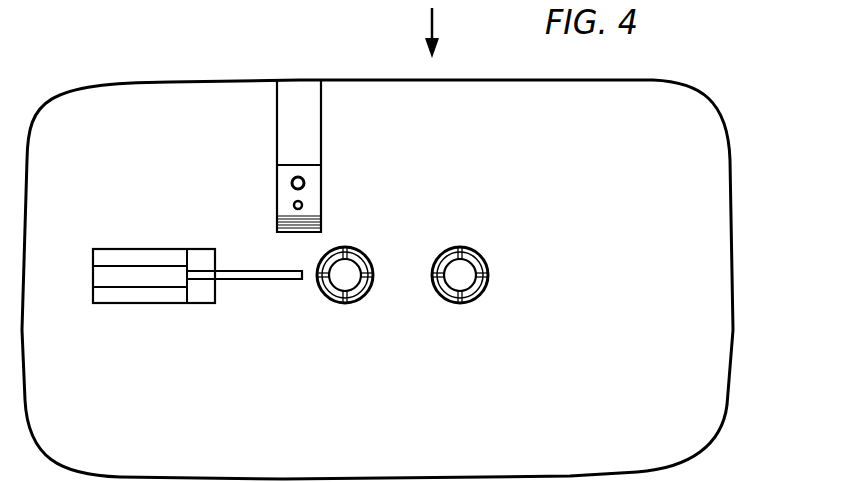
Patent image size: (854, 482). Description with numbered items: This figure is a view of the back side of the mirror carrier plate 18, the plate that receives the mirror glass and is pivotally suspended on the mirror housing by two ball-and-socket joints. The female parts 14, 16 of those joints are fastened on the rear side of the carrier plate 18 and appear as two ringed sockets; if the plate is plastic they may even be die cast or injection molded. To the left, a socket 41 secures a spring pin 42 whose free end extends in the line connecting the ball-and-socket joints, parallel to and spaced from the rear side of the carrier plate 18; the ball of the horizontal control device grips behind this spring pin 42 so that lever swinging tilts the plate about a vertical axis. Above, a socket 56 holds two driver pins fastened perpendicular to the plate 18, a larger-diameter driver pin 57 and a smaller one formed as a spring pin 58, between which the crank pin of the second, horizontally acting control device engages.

The female part of ball-and-socket joint 14 is at (347, 304).
The female part of ball-and-socket joint 16 is at (461, 304).
The mirror carrier plate 18 is at (560, 178).
The socket 41 is at (148, 275).
The spring pin 42 is at (255, 280).
The socket 56 is at (321, 175).
The driver pin 57 is at (291, 184).
The spring pin 58 is at (303, 205).